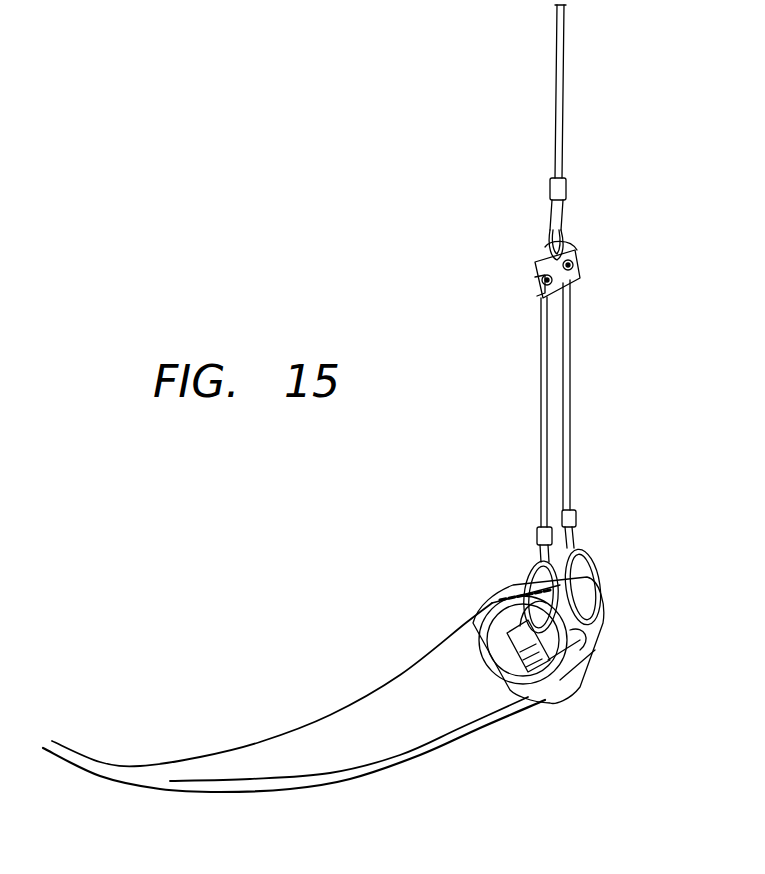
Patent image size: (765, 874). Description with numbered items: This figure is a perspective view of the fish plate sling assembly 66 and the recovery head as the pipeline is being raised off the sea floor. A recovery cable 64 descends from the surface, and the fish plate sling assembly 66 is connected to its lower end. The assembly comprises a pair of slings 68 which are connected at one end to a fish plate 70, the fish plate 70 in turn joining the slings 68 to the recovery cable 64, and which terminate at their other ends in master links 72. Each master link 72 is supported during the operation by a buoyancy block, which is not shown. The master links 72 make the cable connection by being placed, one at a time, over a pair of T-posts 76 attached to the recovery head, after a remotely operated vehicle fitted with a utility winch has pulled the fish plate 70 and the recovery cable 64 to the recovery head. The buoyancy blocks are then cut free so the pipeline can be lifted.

The recovery cable 64 is at (560, 121).
The fish plate sling assembly 66 is at (598, 312).
The slings 68 is at (548, 382).
The fish plate 70 is at (540, 262).
The master links 72 is at (560, 564).
The T-posts 76 is at (476, 628).